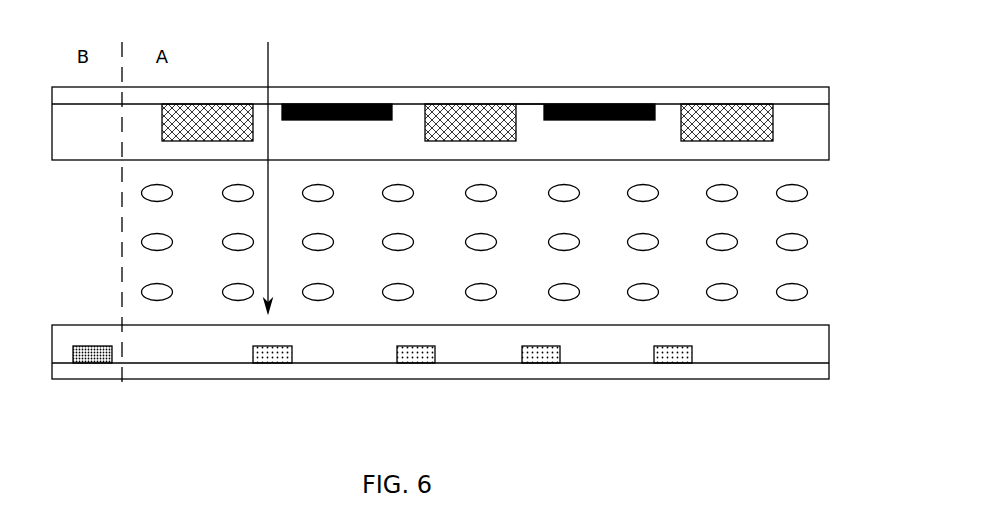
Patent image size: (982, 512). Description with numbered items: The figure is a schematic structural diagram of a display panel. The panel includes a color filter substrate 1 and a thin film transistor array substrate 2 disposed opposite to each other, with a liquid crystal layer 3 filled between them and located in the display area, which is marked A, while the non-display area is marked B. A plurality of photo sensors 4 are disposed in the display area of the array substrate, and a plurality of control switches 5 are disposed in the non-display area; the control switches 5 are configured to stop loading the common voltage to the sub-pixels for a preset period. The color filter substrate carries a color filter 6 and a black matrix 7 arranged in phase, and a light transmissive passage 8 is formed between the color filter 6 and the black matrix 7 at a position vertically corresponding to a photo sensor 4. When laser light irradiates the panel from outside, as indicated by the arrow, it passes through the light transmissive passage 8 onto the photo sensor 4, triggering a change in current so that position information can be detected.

The color filter substrate 1 is at (829, 95).
The thin film transistor array substrate 2 is at (829, 372).
The liquid crystal layer 3 is at (807, 238).
The photo sensor 4 is at (418, 363).
The control switch 5 is at (93, 346).
The color filter 6 is at (727, 104).
The black matrix 7 is at (600, 104).
The light transmissive passage 8 is at (530, 104).